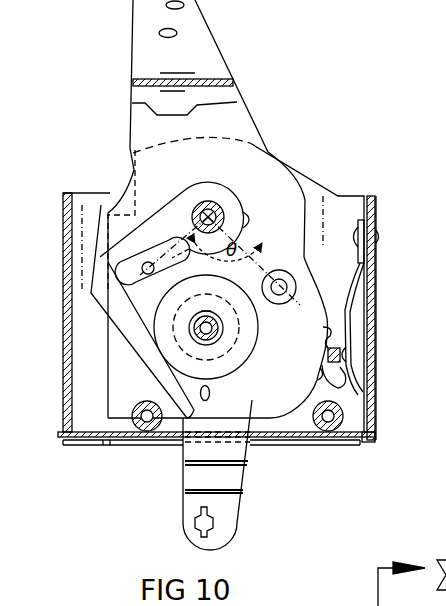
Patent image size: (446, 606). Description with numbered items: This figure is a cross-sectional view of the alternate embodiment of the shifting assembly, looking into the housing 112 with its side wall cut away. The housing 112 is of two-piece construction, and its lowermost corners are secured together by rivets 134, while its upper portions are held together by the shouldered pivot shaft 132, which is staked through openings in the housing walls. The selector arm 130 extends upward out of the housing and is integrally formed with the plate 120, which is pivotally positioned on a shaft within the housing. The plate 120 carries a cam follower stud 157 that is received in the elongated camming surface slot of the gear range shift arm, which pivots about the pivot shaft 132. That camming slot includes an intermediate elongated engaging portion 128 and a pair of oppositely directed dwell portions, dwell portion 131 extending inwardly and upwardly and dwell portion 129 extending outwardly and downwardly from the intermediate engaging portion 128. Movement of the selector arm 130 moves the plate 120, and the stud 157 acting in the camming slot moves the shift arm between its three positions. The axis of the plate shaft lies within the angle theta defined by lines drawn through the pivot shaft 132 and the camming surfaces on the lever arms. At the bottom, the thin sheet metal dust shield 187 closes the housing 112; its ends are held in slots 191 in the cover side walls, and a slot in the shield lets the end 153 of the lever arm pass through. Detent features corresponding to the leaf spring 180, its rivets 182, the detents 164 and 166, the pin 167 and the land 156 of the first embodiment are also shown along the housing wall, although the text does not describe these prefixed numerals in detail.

The housing 112 is at (370, 300).
The plate 120 is at (283, 213).
The intermediate elongated engaging portion 128 is at (167, 263).
The dwell portion 129 is at (101, 269).
The selector arm 130 is at (138, 36).
The dwell portion 131 is at (206, 319).
The pivot shaft 132 is at (208, 201).
The rivets 134 is at (147, 432).
The end of lever arm 153 is at (226, 520).
The stop 156 is at (320, 369).
The cam follower stud 157 is at (149, 274).
The spring end 164 is at (323, 328).
The spring block 166 is at (328, 355).
The hook 167 is at (348, 389).
The leaf spring 180 is at (347, 340).
The rivet 182 is at (378, 230).
The dust shield 187 is at (291, 437).
The slots 191 is at (66, 432).